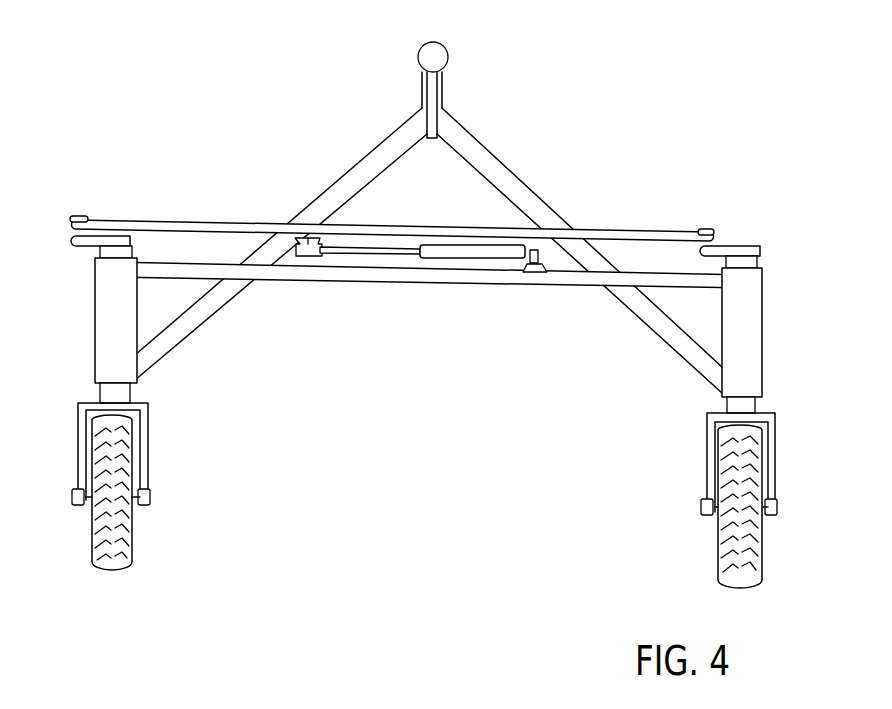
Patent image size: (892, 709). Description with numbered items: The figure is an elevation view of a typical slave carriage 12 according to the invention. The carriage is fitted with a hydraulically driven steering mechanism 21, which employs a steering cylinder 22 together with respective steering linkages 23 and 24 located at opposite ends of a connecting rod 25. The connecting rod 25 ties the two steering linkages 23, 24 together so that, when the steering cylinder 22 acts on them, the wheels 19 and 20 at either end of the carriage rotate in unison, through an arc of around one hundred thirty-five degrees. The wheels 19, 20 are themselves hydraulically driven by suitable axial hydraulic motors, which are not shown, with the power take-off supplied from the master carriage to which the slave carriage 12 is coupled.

The slave carriage 12 is at (421, 295).
The wheel 19 is at (162, 533).
The wheel 20 is at (685, 542).
The steering mechanism 21 is at (410, 250).
The steering cylinder 22 is at (476, 256).
The steering linkage 23 is at (750, 230).
The steering linkage 24 is at (82, 198).
The connecting rod 25 is at (206, 226).